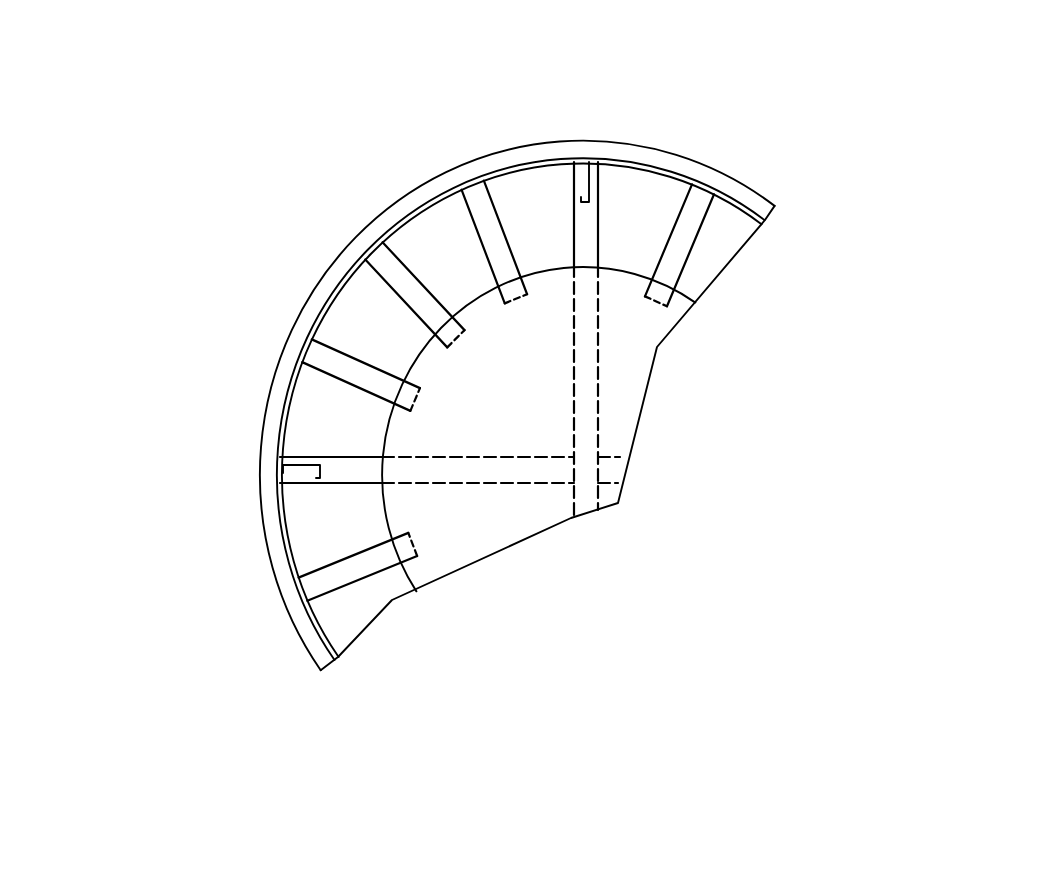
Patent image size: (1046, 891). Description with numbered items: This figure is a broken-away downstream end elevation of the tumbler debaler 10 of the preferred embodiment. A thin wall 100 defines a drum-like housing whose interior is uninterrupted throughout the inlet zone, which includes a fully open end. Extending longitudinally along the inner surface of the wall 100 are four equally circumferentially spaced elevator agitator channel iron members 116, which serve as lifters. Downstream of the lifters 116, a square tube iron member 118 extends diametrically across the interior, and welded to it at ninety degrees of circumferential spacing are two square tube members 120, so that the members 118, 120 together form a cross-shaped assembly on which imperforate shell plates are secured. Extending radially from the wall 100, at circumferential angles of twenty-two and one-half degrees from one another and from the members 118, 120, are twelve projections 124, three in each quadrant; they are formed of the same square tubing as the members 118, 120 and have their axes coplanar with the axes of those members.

The tumbler debaler 10 is at (228, 712).
The thin wall 100 is at (275, 564).
The elevator agitator channel iron member 116 is at (589, 162).
The square tube iron member 118 is at (601, 229).
The square tube member 120 is at (415, 457).
The projection 124 is at (416, 276).